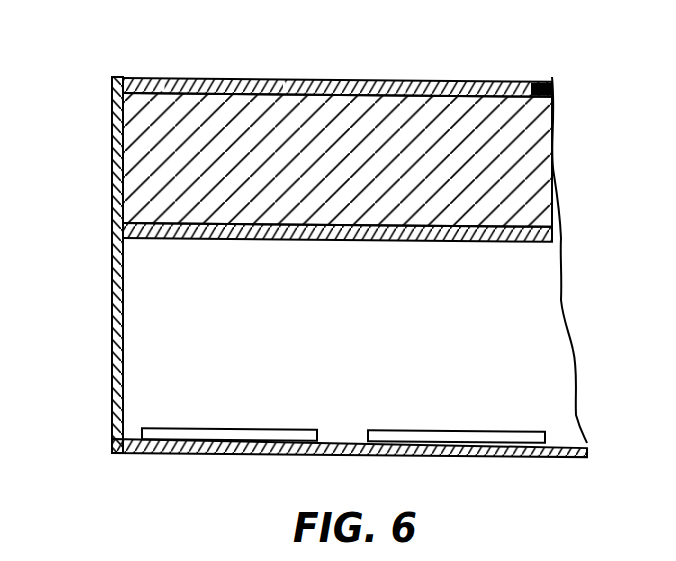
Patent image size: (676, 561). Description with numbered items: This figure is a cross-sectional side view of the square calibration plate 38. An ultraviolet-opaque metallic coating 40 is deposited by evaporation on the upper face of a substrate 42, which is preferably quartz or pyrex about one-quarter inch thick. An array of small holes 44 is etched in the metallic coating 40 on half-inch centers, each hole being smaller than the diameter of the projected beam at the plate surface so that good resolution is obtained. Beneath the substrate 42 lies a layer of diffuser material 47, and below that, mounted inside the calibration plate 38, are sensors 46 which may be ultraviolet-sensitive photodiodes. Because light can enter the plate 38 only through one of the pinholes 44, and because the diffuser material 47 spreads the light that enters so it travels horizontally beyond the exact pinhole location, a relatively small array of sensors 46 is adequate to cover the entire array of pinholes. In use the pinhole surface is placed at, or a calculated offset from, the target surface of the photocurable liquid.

The calibration plate 38 is at (108, 145).
The ultraviolet-opaque metallic coating 40 is at (553, 82).
The substrate 42 is at (537, 173).
The holes 44 is at (285, 78).
The sensors 46 is at (374, 427).
The diffuser material 47 is at (532, 240).